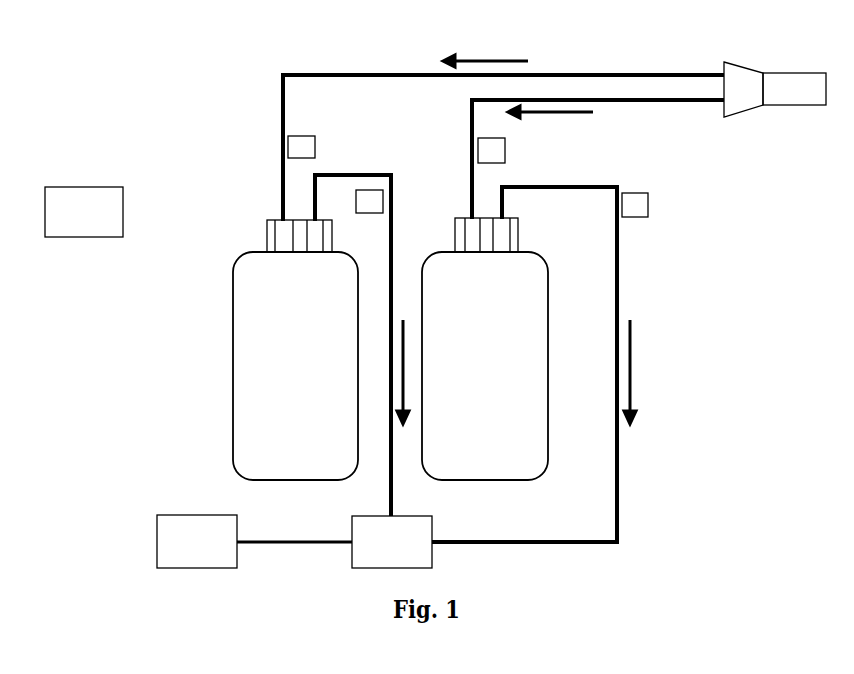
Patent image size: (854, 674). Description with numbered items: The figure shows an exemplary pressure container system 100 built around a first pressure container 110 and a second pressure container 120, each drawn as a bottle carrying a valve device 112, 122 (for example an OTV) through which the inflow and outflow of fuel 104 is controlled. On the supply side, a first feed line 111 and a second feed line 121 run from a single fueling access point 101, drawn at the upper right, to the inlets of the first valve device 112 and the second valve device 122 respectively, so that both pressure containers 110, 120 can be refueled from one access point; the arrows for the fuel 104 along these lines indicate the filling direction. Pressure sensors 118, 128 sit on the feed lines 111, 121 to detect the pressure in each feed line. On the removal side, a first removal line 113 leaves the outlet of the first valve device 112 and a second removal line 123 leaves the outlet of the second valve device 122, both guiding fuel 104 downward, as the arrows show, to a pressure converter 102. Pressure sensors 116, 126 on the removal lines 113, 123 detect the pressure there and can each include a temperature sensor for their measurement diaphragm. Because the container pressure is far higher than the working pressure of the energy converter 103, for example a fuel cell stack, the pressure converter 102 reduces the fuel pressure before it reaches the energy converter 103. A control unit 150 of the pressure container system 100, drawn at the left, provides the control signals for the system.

The pressure container system 100 is at (174, 128).
The fueling access point 101 is at (761, 118).
The pressure converter 102 is at (352, 522).
The energy converter 103 is at (196, 524).
The fuel 104 is at (480, 60).
The first pressure container 110 is at (232, 306).
The first feed line 111 is at (336, 77).
The first valve device 112 is at (267, 227).
The first removal line 113 is at (393, 491).
The pressure sensor 116 is at (371, 192).
The pressure sensor 118 is at (290, 147).
The second pressure container 120 is at (549, 290).
The second feed line 121 is at (649, 102).
The second valve device 122 is at (519, 231).
The second removal line 123 is at (619, 476).
The pressure sensor 126 is at (646, 206).
The pressure sensor 128 is at (500, 156).
The control unit 150 is at (82, 199).